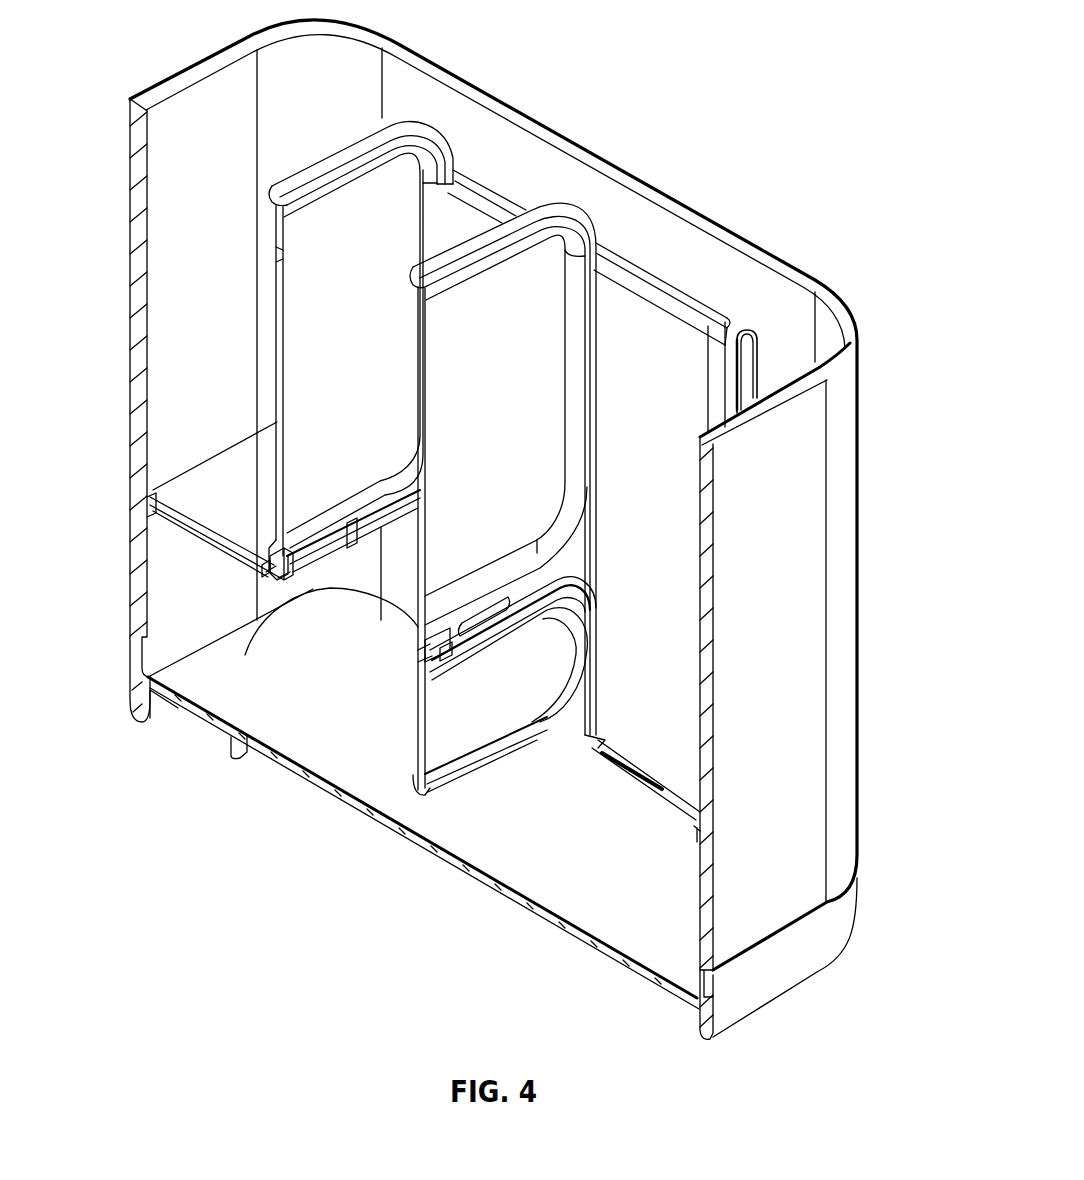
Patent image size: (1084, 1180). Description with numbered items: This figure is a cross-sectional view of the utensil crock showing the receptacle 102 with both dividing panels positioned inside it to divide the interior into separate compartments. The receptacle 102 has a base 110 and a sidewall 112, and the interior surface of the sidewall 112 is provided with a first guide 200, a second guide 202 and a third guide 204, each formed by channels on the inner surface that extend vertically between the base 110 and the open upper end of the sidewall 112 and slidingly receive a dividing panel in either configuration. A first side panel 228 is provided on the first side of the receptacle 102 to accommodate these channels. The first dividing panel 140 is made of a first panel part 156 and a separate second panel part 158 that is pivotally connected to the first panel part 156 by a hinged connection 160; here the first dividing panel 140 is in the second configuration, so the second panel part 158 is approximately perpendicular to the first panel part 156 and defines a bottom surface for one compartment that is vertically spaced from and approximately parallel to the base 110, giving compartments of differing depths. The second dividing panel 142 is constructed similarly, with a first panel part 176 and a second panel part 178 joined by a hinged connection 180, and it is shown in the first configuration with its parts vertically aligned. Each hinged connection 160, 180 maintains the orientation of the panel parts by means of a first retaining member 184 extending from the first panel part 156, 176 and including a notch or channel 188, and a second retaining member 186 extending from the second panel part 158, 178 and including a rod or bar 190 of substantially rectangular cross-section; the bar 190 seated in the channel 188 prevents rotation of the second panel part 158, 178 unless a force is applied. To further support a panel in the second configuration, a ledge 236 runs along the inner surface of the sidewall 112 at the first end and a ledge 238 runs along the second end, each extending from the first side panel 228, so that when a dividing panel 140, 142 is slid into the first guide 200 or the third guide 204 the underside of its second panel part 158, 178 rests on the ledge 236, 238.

The receptacle 102 is at (806, 648).
The base 110 is at (549, 896).
The sidewall 112 is at (806, 713).
The first dividing panel 140 is at (323, 300).
The second dividing panel 142 is at (527, 443).
The first panel part 156 is at (348, 217).
The second panel part 158 is at (140, 597).
The hinged connection 160 is at (328, 582).
The first panel part 176 is at (531, 388).
The second panel part 178 is at (550, 633).
The hinged connection 180 is at (492, 681).
The first retaining member 184 is at (285, 552).
The second retaining member 186 is at (283, 553).
The channel 188 is at (273, 580).
The bar 190 is at (265, 568).
The first guide 200 is at (488, 190).
The second guide 202 is at (593, 300).
The third guide 204 is at (745, 330).
The first side panel 228 is at (664, 534).
The ledge 236 is at (144, 528).
The ledge 238 is at (692, 828).